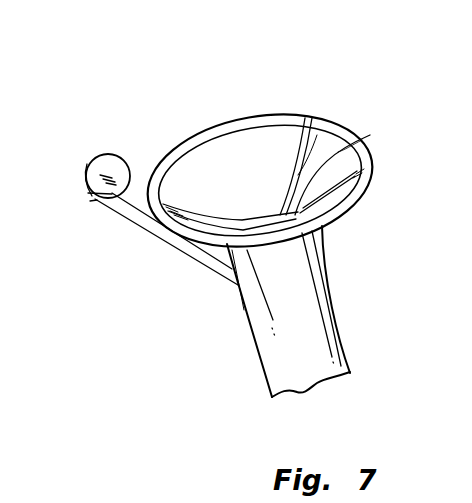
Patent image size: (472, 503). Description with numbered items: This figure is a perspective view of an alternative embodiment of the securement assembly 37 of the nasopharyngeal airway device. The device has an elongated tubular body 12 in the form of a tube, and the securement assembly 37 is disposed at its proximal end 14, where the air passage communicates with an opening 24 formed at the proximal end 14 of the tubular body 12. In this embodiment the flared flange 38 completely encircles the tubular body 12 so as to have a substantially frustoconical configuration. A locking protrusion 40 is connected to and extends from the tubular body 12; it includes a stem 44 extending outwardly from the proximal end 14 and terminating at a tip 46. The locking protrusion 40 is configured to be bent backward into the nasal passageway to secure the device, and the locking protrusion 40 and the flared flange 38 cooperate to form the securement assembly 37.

The securement assembly 37 is at (263, 107).
The opening 24 is at (370, 135).
The flared flange 38 is at (348, 200).
The proximal end 14 is at (337, 227).
The tubular body 12 is at (335, 348).
The stem 44 is at (222, 267).
The locking protrusion 40 is at (155, 352).
The tip 46 is at (83, 167).